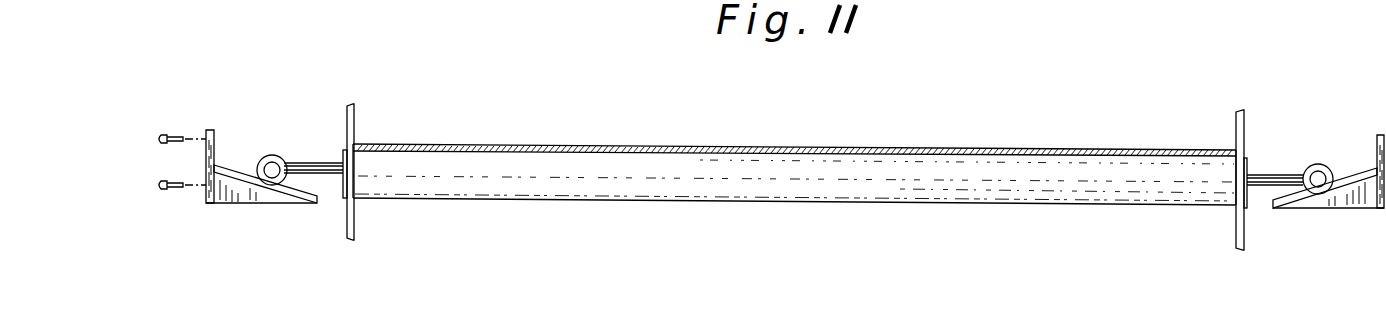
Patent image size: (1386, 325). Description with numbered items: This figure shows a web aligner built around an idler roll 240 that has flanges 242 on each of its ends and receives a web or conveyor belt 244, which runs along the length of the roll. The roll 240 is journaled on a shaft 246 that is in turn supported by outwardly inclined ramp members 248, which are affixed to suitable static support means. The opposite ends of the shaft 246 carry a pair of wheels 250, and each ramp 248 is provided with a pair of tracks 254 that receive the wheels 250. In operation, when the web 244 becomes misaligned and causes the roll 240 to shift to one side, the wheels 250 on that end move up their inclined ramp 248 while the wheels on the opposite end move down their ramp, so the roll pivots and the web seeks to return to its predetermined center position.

The idler roll 240 is at (602, 190).
The flanges 242 is at (354, 118).
The web or conveyor belt 244 is at (756, 146).
The shaft 246 is at (1277, 172).
The ramp members 248 is at (291, 205).
The wheels 250 is at (262, 156).
The tracks 254 is at (236, 184).